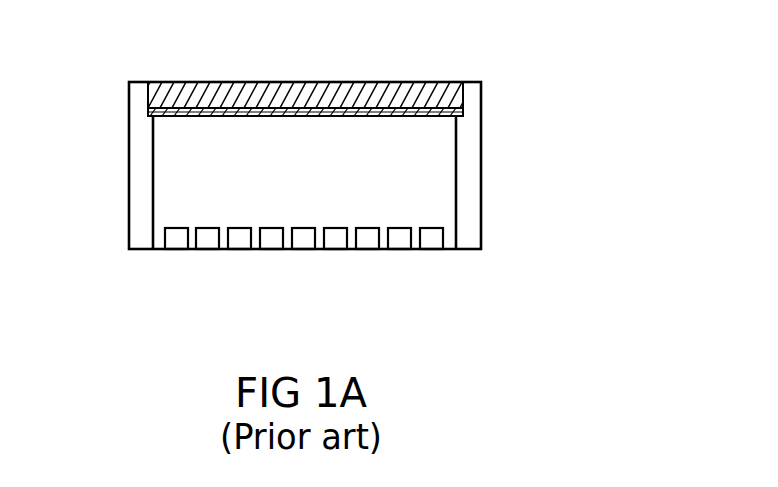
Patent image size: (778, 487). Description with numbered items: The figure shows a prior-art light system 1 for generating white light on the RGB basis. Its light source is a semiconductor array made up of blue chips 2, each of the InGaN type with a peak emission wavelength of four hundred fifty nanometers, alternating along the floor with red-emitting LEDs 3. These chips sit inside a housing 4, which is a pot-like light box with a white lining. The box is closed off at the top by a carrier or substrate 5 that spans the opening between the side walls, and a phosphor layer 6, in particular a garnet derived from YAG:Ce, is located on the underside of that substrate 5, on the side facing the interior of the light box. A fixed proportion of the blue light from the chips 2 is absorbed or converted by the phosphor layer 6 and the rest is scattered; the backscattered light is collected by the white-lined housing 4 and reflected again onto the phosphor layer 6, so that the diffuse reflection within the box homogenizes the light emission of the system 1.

The light system 1 is at (533, 92).
The blue chip 2 is at (237, 236).
The red-emitting LEDs 3 is at (400, 240).
The housing 4 is at (120, 167).
The substrate 5 is at (288, 82).
The phosphor layer 6 is at (415, 113).